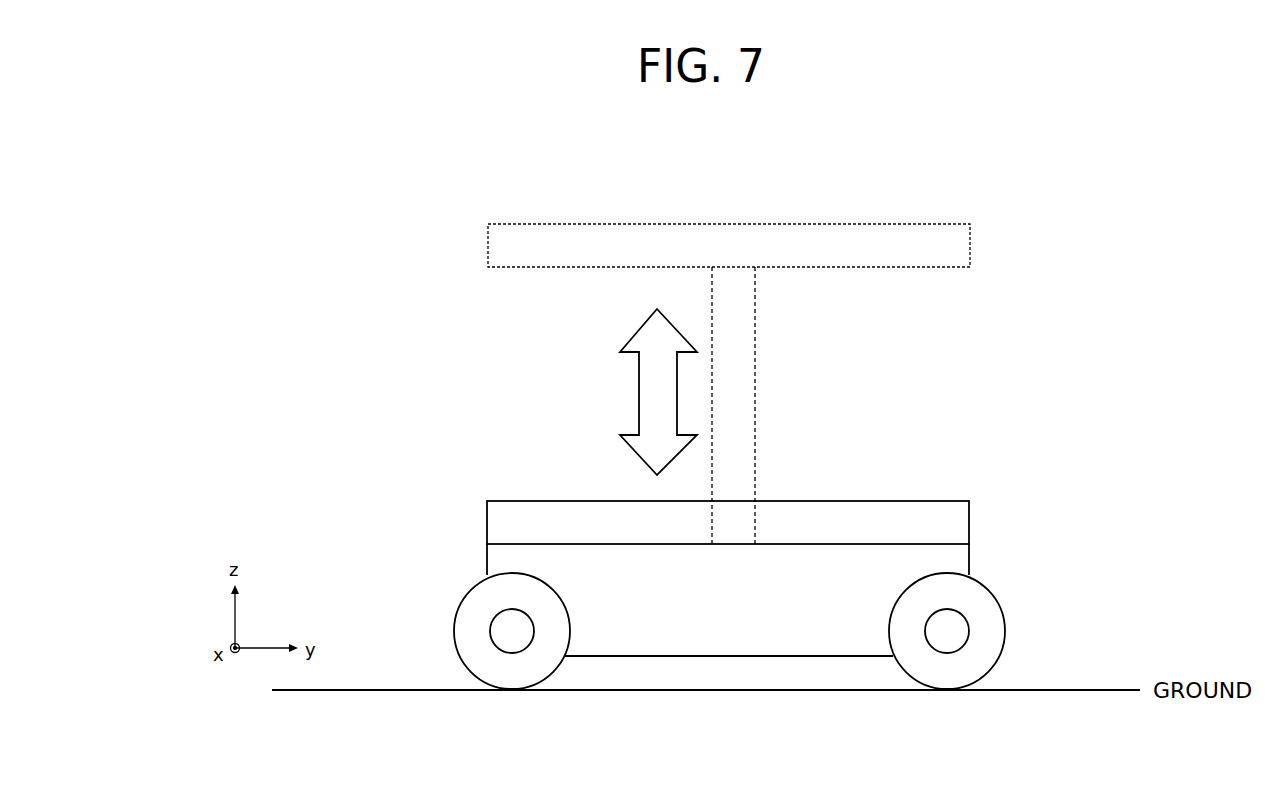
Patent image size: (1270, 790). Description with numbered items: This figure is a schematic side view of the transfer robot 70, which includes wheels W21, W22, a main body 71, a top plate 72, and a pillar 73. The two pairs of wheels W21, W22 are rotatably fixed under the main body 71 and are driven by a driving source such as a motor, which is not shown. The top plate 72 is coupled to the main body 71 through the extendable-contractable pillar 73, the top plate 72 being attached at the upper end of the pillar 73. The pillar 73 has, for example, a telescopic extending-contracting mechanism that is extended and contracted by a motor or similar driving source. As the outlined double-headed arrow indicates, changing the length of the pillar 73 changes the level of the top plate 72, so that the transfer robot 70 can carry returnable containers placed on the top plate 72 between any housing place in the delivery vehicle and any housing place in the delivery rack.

The transfer robot 70 is at (1076, 180).
The main body 71 is at (969, 565).
The top plate 72 is at (970, 247).
The pillar 73 is at (755, 397).
The wheel W21 is at (1006, 645).
The wheel W22 is at (455, 651).